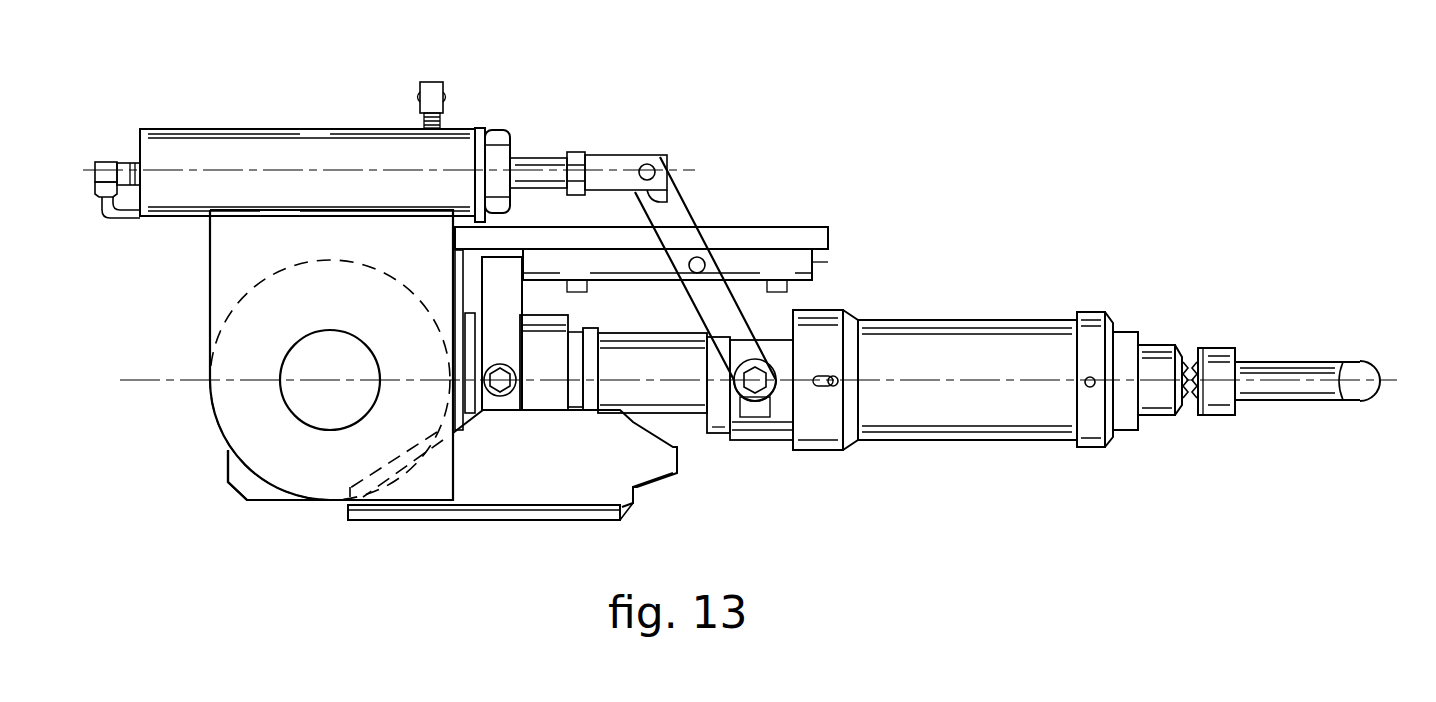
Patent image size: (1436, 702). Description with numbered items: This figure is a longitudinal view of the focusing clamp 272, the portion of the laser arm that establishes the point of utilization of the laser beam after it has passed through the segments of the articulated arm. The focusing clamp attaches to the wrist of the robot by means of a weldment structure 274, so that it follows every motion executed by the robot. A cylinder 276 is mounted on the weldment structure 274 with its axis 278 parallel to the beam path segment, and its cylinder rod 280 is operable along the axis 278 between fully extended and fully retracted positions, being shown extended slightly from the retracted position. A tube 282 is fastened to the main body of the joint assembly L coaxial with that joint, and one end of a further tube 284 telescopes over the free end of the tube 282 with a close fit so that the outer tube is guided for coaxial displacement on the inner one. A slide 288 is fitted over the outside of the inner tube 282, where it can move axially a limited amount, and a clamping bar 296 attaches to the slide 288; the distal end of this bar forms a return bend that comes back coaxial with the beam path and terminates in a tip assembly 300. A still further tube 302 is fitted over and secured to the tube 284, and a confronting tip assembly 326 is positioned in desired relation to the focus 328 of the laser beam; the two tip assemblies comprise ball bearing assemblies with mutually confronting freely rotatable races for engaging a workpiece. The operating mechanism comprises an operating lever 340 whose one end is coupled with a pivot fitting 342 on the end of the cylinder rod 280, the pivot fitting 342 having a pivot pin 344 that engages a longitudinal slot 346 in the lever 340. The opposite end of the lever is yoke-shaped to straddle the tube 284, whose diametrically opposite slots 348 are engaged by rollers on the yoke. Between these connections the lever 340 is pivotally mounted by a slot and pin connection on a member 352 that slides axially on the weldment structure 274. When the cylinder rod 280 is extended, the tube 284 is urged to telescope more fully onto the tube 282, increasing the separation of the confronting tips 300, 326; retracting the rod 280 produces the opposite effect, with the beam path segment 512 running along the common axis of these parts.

The focusing clamp 272 is at (990, 186).
The weldment structure 274 is at (630, 508).
The cylinder 276 is at (178, 128).
The axis 278 is at (273, 152).
The cylinder rod 280 is at (528, 158).
The tube 282 is at (662, 345).
The further tube 284 is at (743, 433).
The slide 288 is at (538, 396).
The clamping bar 296 is at (1335, 366).
The tip assembly 300 is at (1217, 348).
The still further tube 302 is at (950, 325).
The tip assembly 326 is at (1158, 355).
The focus 328 is at (1188, 392).
The operating lever 340 is at (700, 220).
The pivot fitting 342 is at (662, 168).
The pivot pin 344 is at (645, 166).
The longitudinal slot 346 is at (702, 196).
The slots 348 is at (762, 408).
The member 352 is at (822, 260).
The inner shaft 512 is at (965, 382).
The joint assembly L is at (237, 492).